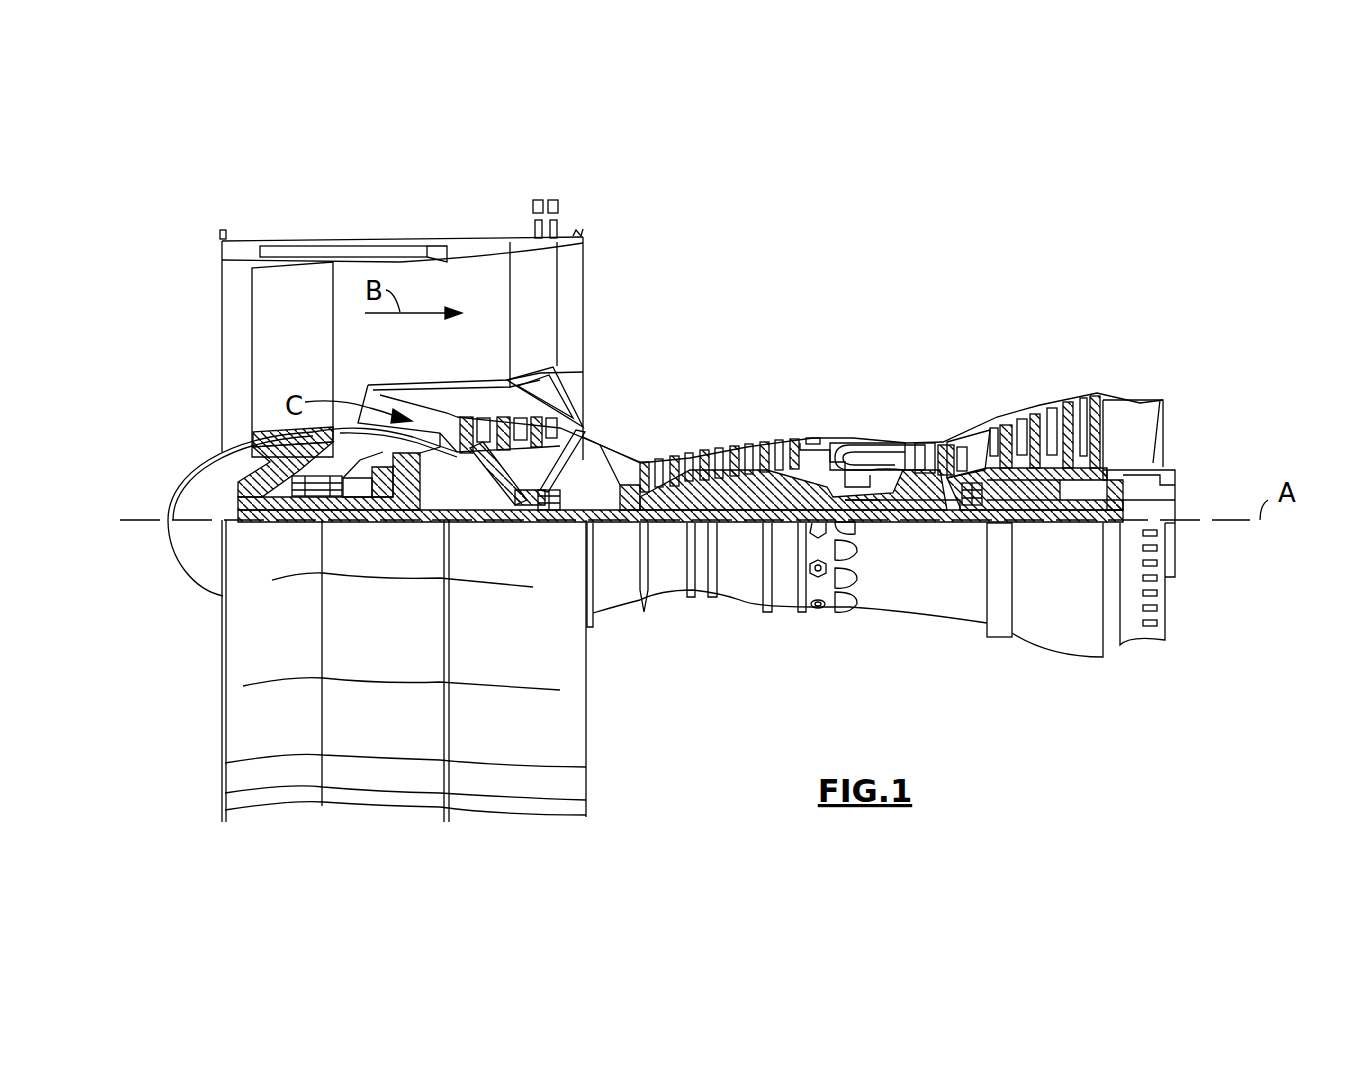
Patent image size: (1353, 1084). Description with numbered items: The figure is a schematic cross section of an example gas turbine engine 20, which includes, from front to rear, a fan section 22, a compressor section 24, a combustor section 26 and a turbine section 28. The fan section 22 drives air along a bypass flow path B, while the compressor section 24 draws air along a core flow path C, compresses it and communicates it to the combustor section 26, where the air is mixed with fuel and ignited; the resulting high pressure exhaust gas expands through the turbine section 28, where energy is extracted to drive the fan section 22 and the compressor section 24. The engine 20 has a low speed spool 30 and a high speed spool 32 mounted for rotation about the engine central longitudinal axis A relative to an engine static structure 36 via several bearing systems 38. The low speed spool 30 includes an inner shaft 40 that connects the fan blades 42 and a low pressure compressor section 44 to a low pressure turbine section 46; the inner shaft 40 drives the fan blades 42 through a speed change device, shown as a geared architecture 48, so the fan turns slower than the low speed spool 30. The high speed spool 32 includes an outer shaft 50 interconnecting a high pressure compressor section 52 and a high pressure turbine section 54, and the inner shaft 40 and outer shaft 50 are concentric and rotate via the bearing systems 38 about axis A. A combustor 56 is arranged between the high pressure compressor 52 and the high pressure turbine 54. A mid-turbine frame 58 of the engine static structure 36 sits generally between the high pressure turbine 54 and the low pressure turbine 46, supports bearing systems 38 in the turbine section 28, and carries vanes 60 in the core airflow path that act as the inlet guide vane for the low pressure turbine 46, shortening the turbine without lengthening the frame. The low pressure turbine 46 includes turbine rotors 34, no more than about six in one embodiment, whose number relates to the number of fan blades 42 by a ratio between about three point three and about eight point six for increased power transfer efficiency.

The gas turbine engine 20 is at (880, 270).
The fan section 22 is at (430, 212).
The compressor section 24 is at (445, 360).
The combustor section 26 is at (853, 360).
The turbine section 28 is at (957, 360).
The low speed spool 30 is at (743, 526).
The high speed spool 32 is at (787, 487).
The turbine rotors 34 is at (1060, 478).
The engine static structure 36 is at (783, 607).
The bearing systems 38 is at (300, 520).
The inner shaft 40 is at (608, 527).
The fan blades 42 is at (285, 379).
The low pressure compressor section 44 is at (520, 423).
The low pressure turbine section 46 is at (1050, 417).
The geared architecture 48 is at (410, 505).
The outer shaft 50 is at (870, 510).
The high pressure compressor section 52 is at (720, 497).
The high pressure turbine section 54 is at (923, 440).
The combustor 56 is at (858, 463).
The mid-turbine frame 58 is at (963, 432).
The vanes 60 is at (997, 494).